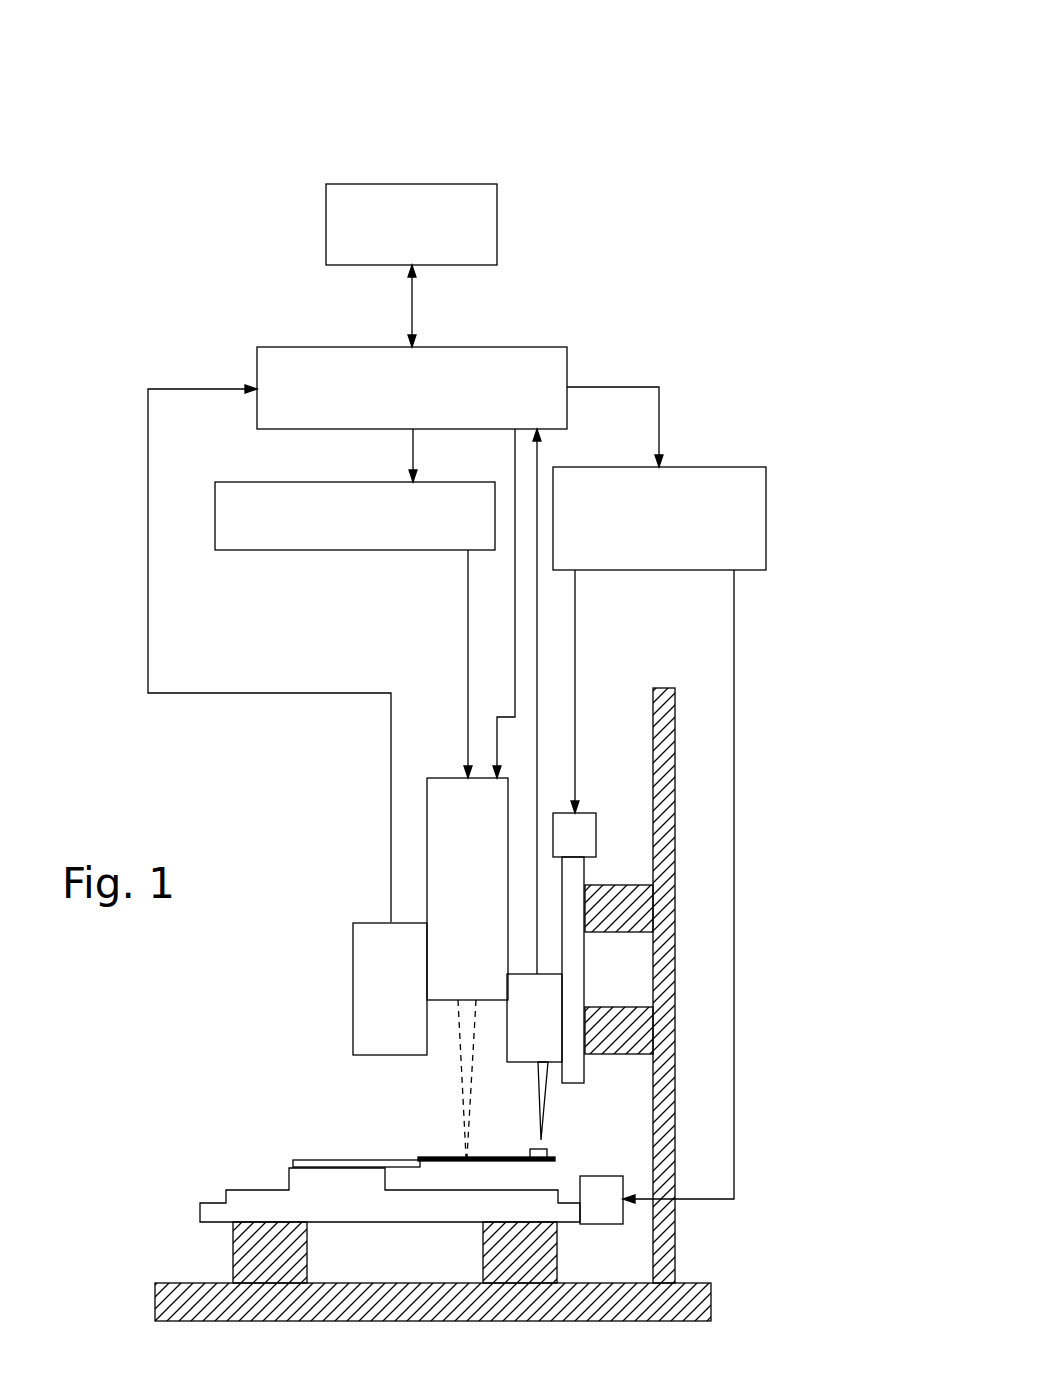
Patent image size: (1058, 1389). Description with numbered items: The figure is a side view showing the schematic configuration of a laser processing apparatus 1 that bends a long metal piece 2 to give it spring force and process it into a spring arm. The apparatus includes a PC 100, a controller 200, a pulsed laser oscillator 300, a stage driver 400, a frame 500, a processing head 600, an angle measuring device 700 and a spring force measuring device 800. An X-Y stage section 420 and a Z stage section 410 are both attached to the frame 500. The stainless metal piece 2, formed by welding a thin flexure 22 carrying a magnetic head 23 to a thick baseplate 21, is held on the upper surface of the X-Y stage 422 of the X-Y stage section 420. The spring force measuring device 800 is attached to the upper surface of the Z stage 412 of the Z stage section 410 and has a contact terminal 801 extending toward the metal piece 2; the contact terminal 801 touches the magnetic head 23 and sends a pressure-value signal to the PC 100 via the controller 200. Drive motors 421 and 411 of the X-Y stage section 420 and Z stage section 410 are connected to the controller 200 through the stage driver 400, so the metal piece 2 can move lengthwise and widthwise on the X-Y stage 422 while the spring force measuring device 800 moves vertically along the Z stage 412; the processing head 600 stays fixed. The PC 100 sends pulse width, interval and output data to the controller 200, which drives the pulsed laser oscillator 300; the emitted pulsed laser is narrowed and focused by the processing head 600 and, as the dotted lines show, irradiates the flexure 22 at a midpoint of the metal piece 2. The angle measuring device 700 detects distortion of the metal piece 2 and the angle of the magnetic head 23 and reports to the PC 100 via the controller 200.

The laser processing apparatus 1 is at (690, 108).
The metal piece 2 is at (419, 1091).
The baseplate 21 is at (348, 1160).
The flexure 22 is at (445, 1157).
The magnetic head 23 is at (547, 1148).
The PC 100 is at (448, 182).
The controller 200 is at (532, 347).
The pulsed laser oscillator 300 is at (297, 551).
The stage driver 400 is at (740, 467).
The Z stage section 410 is at (603, 863).
The drive motor 411 is at (588, 813).
The Z stage 412 is at (587, 987).
The X-Y stage section 420 is at (353, 1205).
The drive motor 421 is at (600, 1177).
The X-Y stage 422 is at (212, 1215).
The frame 500 is at (690, 1307).
The processing head 600 is at (440, 778).
The angle measuring device 700 is at (365, 923).
The spring force measuring device 800 is at (515, 1076).
The contact terminal 801 is at (543, 1100).